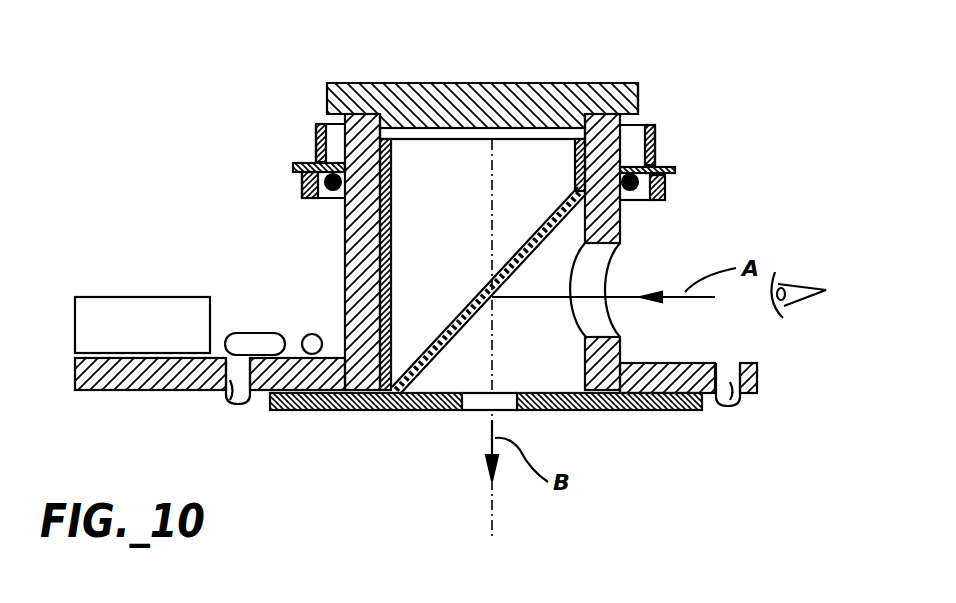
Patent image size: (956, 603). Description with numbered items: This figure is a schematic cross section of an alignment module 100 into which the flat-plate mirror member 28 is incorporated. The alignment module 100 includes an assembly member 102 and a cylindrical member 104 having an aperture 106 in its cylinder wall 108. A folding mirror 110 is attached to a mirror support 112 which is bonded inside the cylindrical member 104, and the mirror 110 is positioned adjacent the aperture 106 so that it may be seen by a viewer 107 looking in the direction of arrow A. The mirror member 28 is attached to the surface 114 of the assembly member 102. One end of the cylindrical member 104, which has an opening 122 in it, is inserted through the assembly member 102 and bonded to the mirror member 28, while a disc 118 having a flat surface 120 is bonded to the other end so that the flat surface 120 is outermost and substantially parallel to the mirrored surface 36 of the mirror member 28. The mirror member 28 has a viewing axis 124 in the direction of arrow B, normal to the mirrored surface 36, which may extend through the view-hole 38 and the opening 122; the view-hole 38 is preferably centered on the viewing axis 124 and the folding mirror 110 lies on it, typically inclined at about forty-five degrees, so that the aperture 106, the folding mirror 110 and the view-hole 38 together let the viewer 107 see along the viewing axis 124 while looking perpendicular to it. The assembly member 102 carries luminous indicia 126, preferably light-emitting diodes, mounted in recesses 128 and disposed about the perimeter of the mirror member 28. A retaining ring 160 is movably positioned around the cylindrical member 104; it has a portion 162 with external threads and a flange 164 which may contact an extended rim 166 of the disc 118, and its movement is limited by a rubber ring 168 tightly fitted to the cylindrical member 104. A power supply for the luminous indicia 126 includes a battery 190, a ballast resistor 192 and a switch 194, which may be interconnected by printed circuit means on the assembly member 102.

The alignment module 100 is at (648, 53).
The assembly member 102 is at (112, 392).
The cylindrical member 104 is at (345, 290).
The aperture 106 is at (612, 324).
The viewer 107 is at (790, 271).
The cylinder wall 108 is at (622, 236).
The mirror 110 is at (538, 232).
The mirror support 112 is at (391, 228).
The surface 114 is at (165, 392).
The disc 118 is at (487, 92).
The flat surface 120 is at (405, 83).
The opening 122 is at (430, 408).
The viewing axis 124 is at (490, 188).
The luminous indicia 126 is at (248, 398).
The recesses 128 is at (228, 402).
The retaining ring 160 is at (302, 162).
The portion 162 is at (655, 150).
The flange 164 is at (305, 170).
The extended rim 166 is at (640, 88).
The rubber ring 168 is at (330, 190).
The battery 190 is at (120, 300).
The ballast resistor 192 is at (306, 334).
The switch 194 is at (238, 332).
The mirror member 28 is at (665, 410).
The mirrored surface 36 is at (570, 402).
The view-hole 38 is at (470, 406).